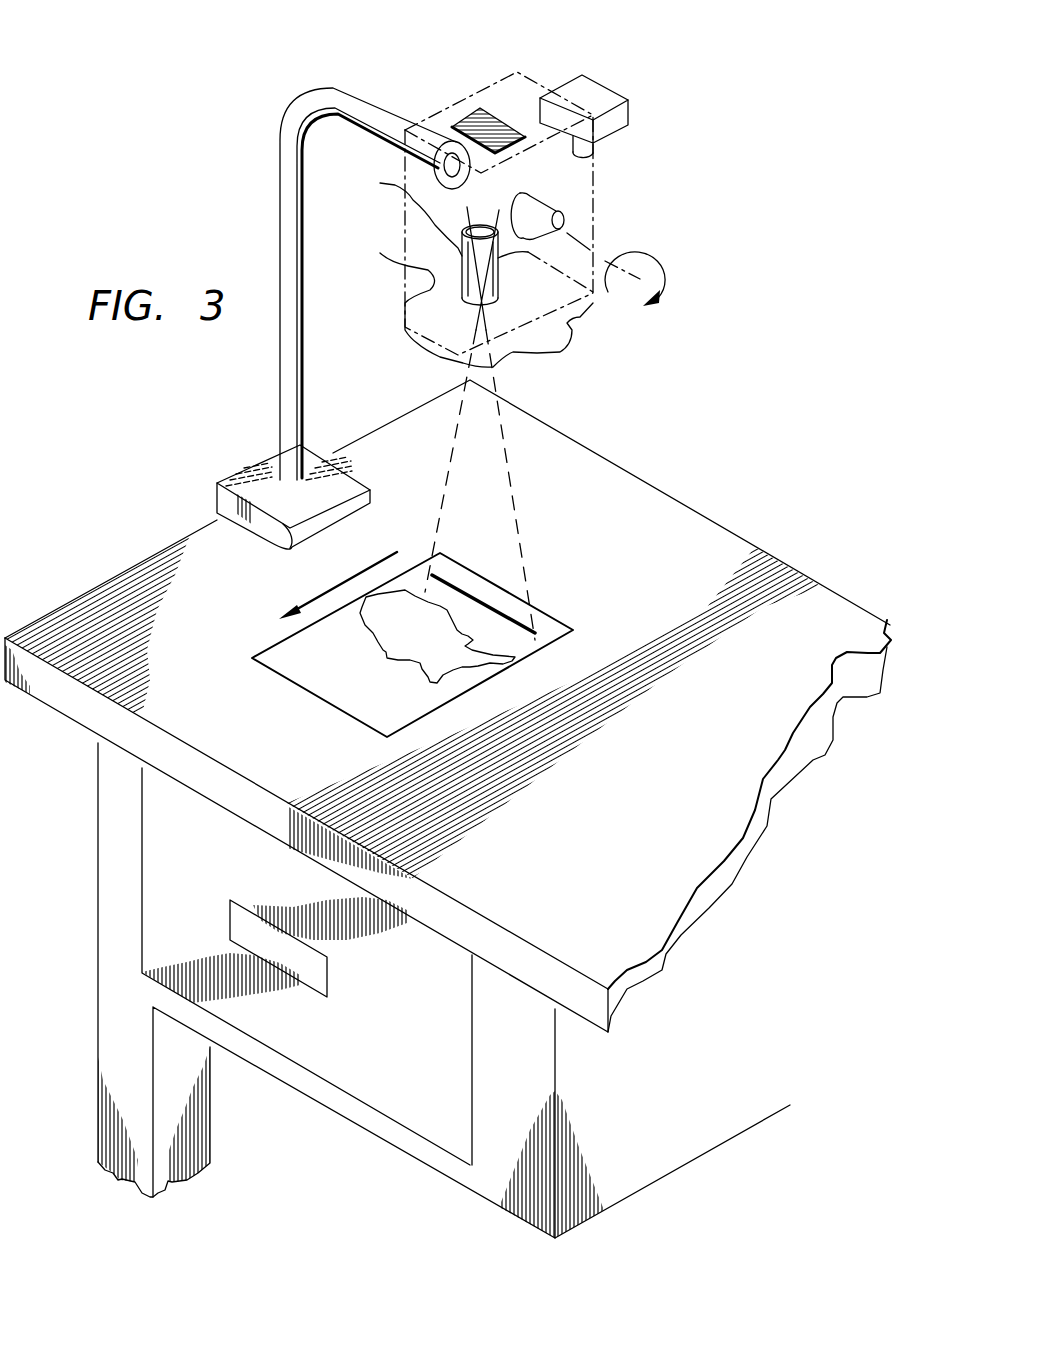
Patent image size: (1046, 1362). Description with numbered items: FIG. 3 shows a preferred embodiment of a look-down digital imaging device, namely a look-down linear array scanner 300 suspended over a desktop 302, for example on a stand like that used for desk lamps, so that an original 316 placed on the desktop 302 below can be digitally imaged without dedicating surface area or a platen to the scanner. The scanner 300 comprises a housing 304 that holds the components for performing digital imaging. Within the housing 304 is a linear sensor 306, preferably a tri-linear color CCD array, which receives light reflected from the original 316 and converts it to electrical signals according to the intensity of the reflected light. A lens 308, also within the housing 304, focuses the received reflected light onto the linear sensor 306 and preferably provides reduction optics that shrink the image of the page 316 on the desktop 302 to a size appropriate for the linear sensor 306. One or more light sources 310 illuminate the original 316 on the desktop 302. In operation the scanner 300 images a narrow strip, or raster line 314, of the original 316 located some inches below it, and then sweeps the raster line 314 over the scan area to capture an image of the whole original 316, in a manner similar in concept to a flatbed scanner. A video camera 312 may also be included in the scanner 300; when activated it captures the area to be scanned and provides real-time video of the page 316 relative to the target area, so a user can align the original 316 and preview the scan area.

The look-down linear array scanner 300 is at (766, 70).
The desktop 302 is at (688, 506).
The housing 304 is at (462, 101).
The linear sensor 306 is at (523, 125).
The lens 308 is at (462, 246).
The light source 310 is at (430, 293).
The video camera 312 is at (628, 111).
The raster line 314 is at (467, 593).
The original 316 is at (560, 618).